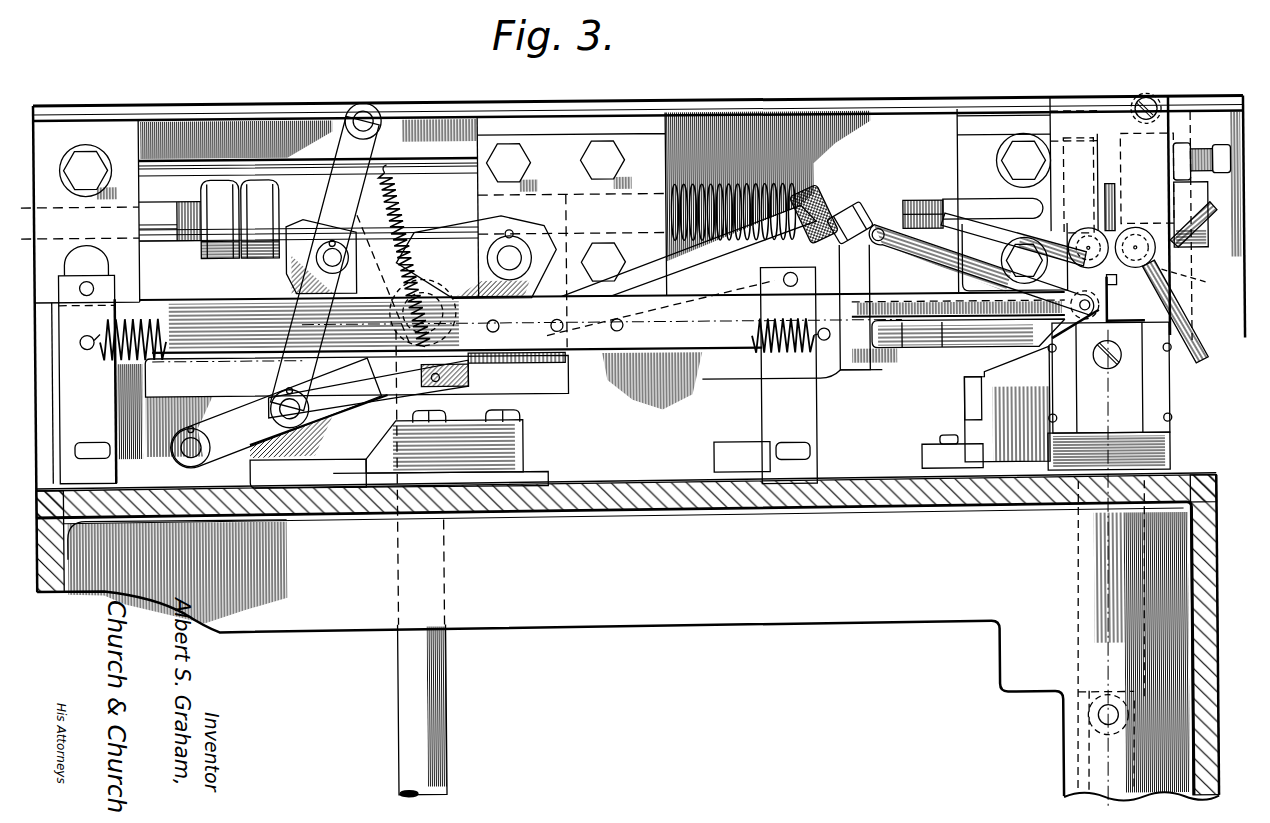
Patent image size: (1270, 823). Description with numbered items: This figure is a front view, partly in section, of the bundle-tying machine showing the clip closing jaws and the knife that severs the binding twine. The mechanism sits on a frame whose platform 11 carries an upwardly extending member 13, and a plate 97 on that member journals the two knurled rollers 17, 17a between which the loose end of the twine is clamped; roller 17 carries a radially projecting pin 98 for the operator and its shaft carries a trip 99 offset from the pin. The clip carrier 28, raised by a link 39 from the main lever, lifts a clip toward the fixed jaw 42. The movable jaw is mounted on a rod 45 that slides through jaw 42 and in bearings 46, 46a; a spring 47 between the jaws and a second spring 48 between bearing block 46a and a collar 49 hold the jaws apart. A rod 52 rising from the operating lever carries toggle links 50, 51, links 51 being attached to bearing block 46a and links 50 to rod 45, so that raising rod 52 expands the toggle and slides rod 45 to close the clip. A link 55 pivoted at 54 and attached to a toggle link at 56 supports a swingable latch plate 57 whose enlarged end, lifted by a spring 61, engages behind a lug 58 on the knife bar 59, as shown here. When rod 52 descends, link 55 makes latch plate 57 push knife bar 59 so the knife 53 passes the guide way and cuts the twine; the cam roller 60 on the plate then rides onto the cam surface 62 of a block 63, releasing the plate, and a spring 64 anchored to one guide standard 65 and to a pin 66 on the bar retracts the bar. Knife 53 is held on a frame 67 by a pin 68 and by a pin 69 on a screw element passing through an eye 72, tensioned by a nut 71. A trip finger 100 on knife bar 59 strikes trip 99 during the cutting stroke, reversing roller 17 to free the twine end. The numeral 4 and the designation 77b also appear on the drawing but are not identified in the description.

The section line 4 is at (1098, 98).
The platform 11 is at (580, 493).
The member 13 is at (712, 106).
The knurled roller 17 is at (1136, 238).
The knurled roller 17a is at (1087, 238).
The clip carrier 28 is at (1127, 392).
The link 39 is at (1092, 768).
The jaw 42 is at (1077, 192).
The rod 45 is at (457, 208).
The bearing 46 is at (140, 290).
The bearing block 46a is at (536, 146).
The spring 47 is at (1132, 196).
The spring 48 is at (824, 203).
The collar 49 is at (862, 210).
The toggle link 50 is at (305, 262).
The toggle link 51 is at (484, 263).
The rod 52 is at (393, 672).
The knife 53 is at (968, 270).
The pivot 54 is at (373, 116).
The link 55 is at (343, 151).
The pivotal attachment 56 is at (318, 268).
The latch plate 57 is at (329, 419).
The lug 58 is at (505, 395).
The knife bar 59 is at (583, 353).
The cam roller 60 is at (262, 422).
The spring 61 is at (397, 233).
The cam surface 62 is at (377, 441).
The block 63 is at (518, 433).
The spring 64 is at (770, 364).
The guide standard 65 is at (103, 403).
The pin 66 is at (819, 336).
The frame 67 is at (860, 382).
The pin 68 is at (1095, 320).
The pin 69 is at (925, 264).
The nut 71 is at (803, 241).
The eye 72 is at (851, 258).
The arm 77b is at (1204, 292).
The plate 97 is at (1073, 147).
The pin 98 is at (1198, 372).
The trip 99 is at (1195, 252).
The trip finger 100 is at (1004, 216).